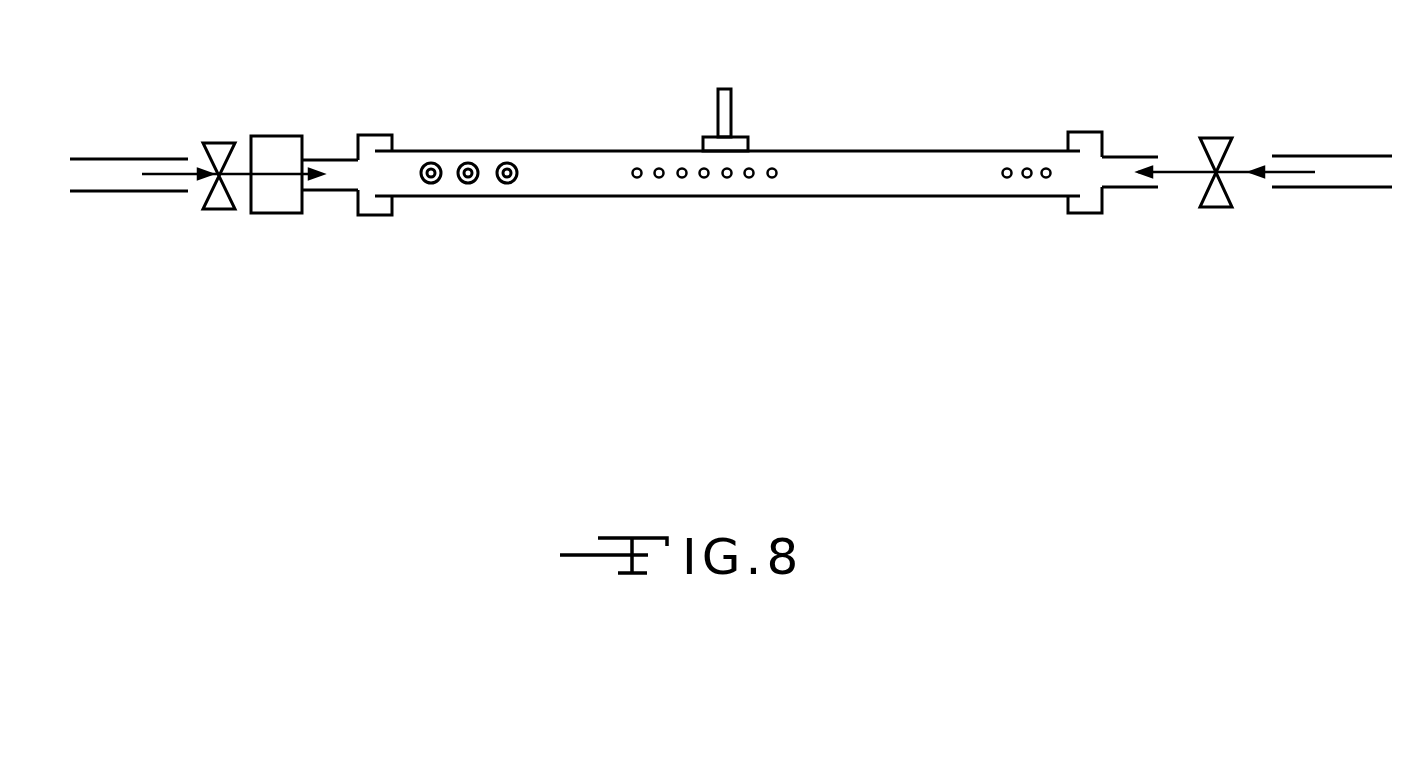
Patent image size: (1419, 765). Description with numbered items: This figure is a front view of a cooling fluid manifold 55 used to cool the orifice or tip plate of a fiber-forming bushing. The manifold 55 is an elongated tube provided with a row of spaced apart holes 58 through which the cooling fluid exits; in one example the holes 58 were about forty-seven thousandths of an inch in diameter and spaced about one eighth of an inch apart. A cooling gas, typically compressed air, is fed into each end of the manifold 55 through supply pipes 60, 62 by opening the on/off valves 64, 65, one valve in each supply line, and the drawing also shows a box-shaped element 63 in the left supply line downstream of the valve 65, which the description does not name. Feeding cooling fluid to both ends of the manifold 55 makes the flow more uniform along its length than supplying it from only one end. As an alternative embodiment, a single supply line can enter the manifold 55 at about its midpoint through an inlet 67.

The manifold 55 is at (877, 180).
The holes 58 is at (727, 179).
The supply pipe 60 is at (124, 177).
The supply pipe 62 is at (1303, 177).
The control box 63 is at (272, 204).
The on/off valve 64 is at (1217, 138).
The on/off valve 65 is at (220, 139).
The inlet 67 is at (730, 110).